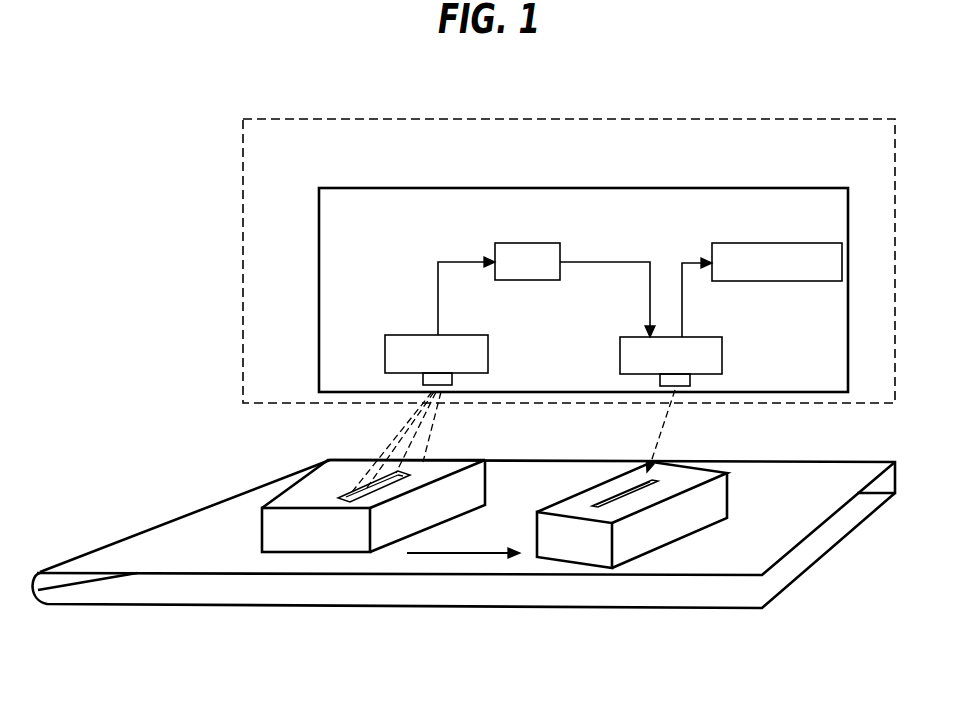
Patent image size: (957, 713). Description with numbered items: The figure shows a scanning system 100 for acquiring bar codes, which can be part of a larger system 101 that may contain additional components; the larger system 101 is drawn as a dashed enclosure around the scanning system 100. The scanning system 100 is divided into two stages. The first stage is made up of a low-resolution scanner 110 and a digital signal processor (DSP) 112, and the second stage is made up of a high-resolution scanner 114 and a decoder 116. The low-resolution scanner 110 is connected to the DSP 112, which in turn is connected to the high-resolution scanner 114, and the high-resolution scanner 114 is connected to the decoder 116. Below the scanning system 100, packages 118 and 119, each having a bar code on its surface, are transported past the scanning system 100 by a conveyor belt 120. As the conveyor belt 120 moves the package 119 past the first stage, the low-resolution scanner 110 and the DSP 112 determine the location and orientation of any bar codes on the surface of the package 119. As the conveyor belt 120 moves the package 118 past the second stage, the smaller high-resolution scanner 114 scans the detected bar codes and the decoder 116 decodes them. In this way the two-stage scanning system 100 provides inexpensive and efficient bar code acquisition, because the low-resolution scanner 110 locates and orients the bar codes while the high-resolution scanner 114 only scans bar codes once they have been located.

The larger system 101 is at (626, 101).
The scanning system 100 is at (546, 170).
The digital signal processor (DSP) 112 is at (519, 243).
The decoder 116 is at (760, 243).
The low-resolution scanner 110 is at (449, 335).
The high-resolution scanner 114 is at (706, 337).
The conveyor belt 120 is at (164, 522).
The package 119 is at (322, 553).
The package 118 is at (583, 563).